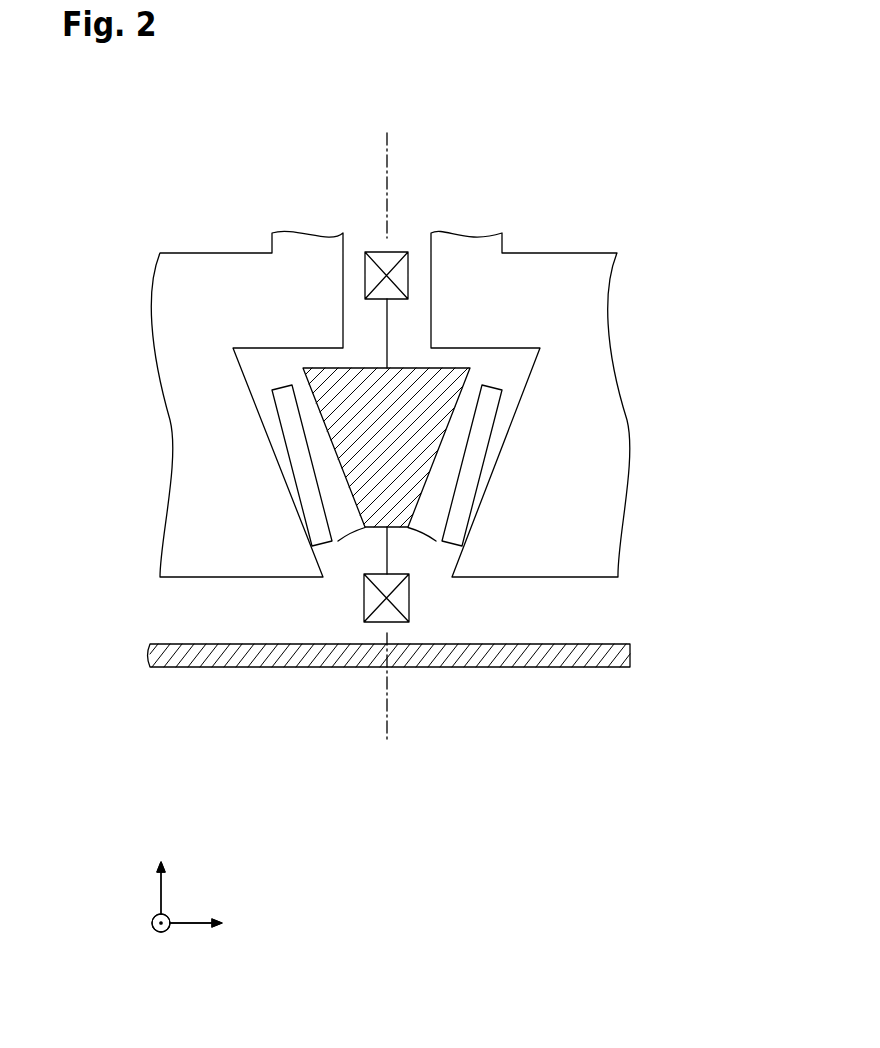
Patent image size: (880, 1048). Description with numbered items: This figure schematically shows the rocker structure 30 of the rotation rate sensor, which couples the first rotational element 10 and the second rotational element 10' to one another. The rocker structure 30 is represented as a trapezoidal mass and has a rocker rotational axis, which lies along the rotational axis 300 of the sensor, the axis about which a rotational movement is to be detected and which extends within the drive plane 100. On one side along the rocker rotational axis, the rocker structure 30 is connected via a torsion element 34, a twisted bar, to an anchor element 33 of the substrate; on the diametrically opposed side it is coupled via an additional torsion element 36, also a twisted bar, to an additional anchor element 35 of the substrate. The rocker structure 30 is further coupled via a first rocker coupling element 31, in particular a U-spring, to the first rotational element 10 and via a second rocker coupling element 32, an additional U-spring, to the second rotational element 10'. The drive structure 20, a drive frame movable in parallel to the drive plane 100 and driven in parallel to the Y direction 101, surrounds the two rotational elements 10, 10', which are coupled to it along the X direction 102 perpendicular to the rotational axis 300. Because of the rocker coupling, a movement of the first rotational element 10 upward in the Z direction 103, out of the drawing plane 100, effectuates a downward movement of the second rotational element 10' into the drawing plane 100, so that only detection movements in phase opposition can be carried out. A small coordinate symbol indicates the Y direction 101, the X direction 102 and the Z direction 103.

The first rotational element 10 is at (198, 404).
The second rotational element 10' is at (578, 404).
The drive structure 20 is at (222, 712).
The rocker structure 30 is at (340, 582).
The first rocker coupling element 31 is at (303, 480).
The second rocker coupling element 32 is at (697, 477).
The anchor element 33 is at (445, 625).
The torsion element 34 is at (445, 596).
The additional anchor element 35 is at (378, 250).
The additional torsion element 36 is at (388, 330).
The rotational axis 300 is at (387, 725).
The drive plane 100 is at (236, 887).
The Y direction 101 is at (161, 890).
The X direction 102 is at (190, 926).
The Z direction 103 is at (154, 930).